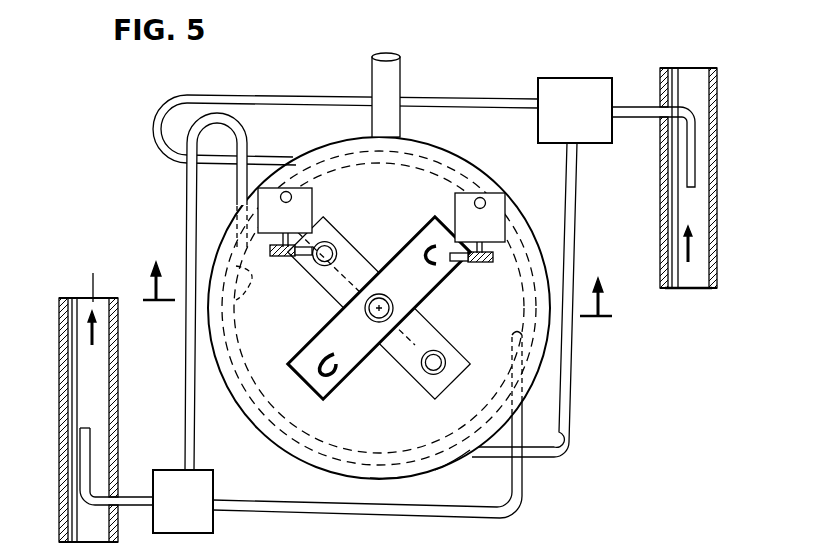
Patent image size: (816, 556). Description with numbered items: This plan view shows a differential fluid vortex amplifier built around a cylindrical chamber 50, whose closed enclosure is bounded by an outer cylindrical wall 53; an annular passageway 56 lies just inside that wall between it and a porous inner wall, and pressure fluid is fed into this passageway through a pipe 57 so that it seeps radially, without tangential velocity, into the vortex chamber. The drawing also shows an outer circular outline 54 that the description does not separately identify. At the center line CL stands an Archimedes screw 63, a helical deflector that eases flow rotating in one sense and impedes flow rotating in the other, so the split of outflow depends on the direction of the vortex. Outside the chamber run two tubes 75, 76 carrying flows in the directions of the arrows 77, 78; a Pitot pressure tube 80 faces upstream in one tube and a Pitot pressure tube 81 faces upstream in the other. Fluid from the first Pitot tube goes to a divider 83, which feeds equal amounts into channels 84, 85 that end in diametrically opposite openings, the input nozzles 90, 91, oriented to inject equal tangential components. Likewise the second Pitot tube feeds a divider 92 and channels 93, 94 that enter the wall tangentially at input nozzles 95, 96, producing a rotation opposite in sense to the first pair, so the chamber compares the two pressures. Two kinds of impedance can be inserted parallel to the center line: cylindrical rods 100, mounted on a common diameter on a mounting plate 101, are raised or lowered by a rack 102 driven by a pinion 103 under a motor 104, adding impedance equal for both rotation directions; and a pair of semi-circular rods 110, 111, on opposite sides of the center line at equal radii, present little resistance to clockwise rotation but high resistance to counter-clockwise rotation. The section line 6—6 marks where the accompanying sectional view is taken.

The cylindrical chamber 50 is at (380, 418).
The cylindrical wall 53 is at (435, 470).
The circular housing 54 is at (337, 462).
The annular passageway 56 is at (389, 470).
The pipe 57 is at (383, 78).
The Archimedes screw 63 is at (366, 311).
The tube 75 is at (97, 380).
The tube 76 is at (703, 256).
The arrow 77 is at (93, 275).
The arrow 78 is at (688, 292).
The Pitot pressure tube 80 is at (88, 447).
The Pitot pressure tube 81 is at (692, 164).
The divider 83 is at (182, 524).
The channel 84 is at (184, 427).
The channel 85 is at (403, 519).
The input nozzle 90 is at (251, 292).
The input nozzle 91 is at (511, 352).
The divider 92 is at (578, 88).
The channel 93 is at (455, 106).
The channel 94 is at (578, 204).
The input nozzle 95 is at (362, 176).
The input nozzle 96 is at (417, 450).
The cylindrical rods 100 is at (343, 228).
The mounting plate 101 is at (357, 264).
The rack 102 is at (312, 257).
The pinion 103 is at (270, 253).
The motor 104 is at (303, 212).
The rod 110 is at (420, 240).
The rod 111 is at (337, 371).
The center line CL is at (386, 310).
The section line 6— 6 is at (383, 277).